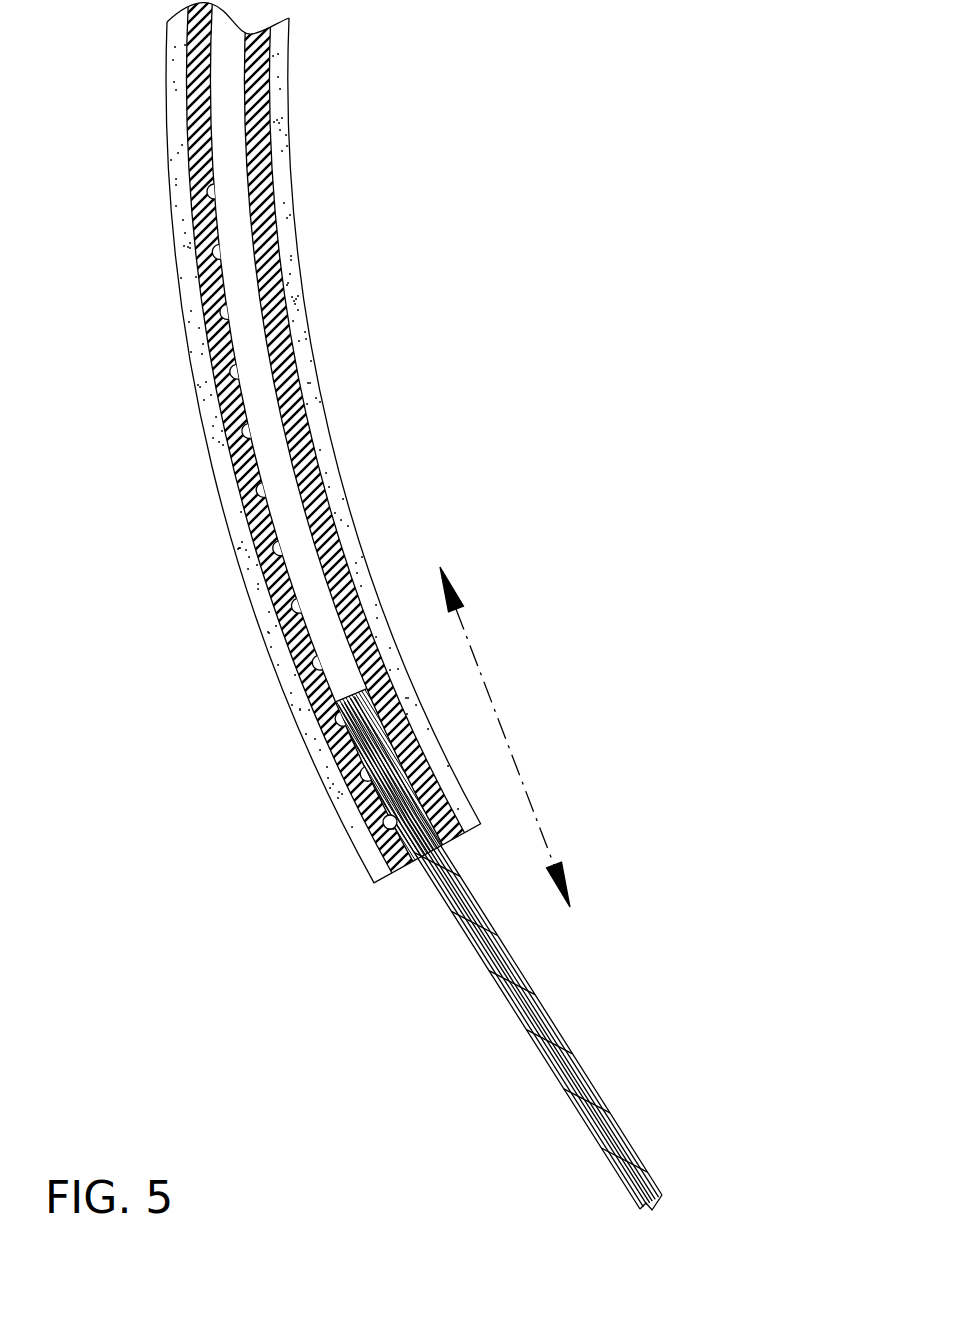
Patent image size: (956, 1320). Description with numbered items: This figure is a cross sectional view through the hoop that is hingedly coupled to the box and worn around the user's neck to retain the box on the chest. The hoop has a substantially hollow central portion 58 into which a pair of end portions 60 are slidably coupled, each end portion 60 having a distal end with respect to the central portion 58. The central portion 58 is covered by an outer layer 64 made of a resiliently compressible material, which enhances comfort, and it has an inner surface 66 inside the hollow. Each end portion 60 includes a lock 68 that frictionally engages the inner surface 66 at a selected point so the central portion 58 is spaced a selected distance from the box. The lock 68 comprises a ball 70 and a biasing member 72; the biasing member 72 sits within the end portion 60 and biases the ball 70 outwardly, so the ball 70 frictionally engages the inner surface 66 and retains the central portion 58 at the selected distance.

The central portion 58 is at (180, 290).
The end portion 60 is at (557, 1020).
The outer layer 64 is at (222, 462).
The inner surface 66 is at (284, 402).
The lock 68 is at (379, 818).
The ball 70 is at (422, 842).
The biasing member 72 is at (403, 808).